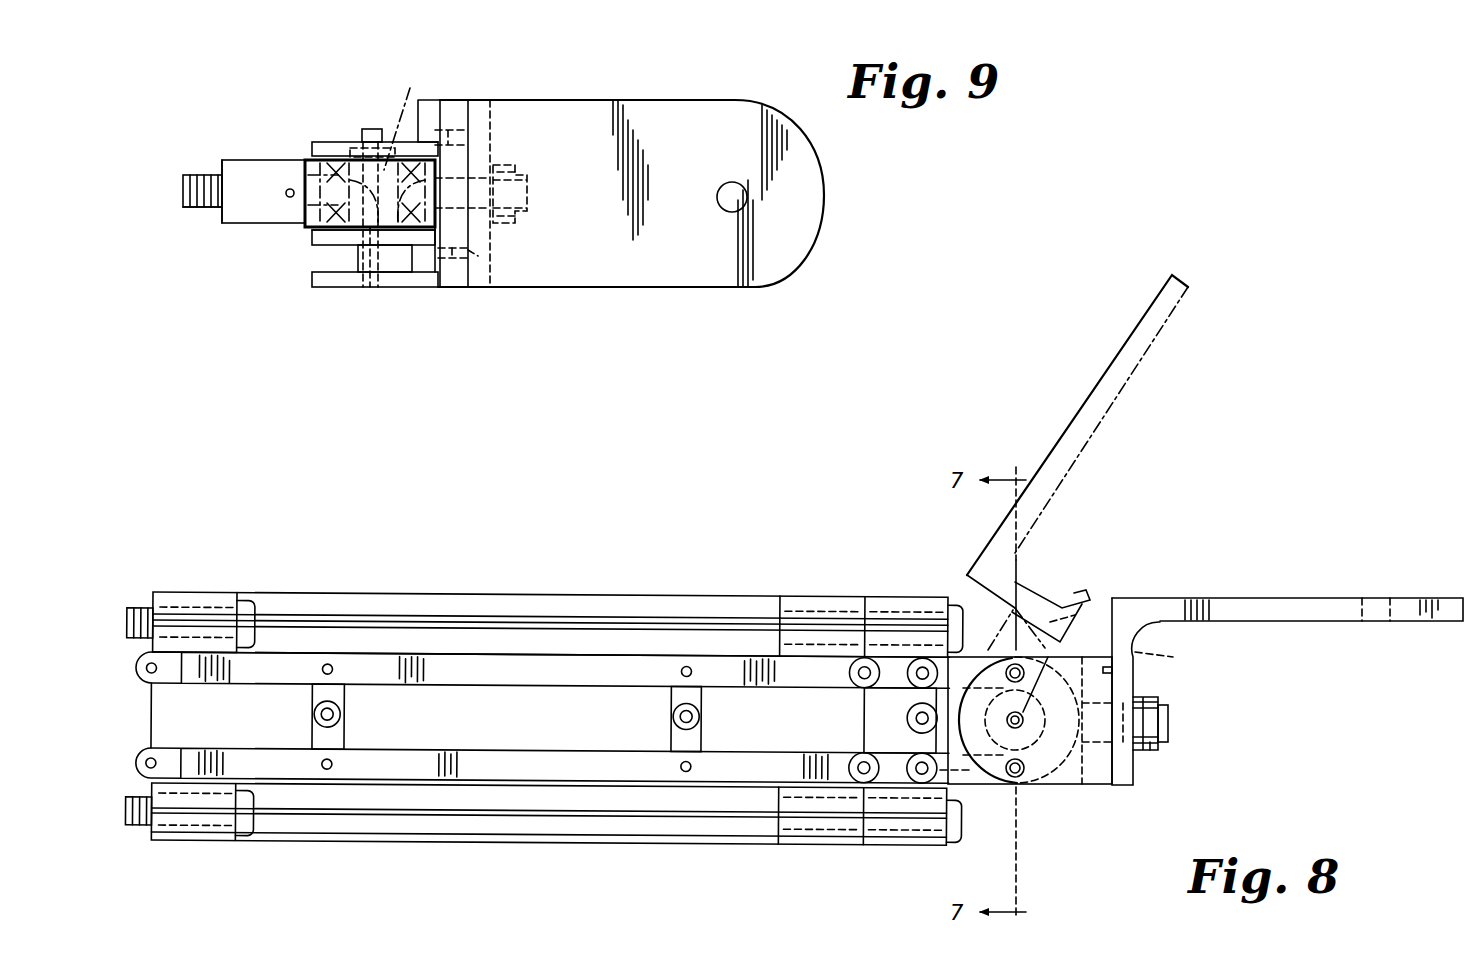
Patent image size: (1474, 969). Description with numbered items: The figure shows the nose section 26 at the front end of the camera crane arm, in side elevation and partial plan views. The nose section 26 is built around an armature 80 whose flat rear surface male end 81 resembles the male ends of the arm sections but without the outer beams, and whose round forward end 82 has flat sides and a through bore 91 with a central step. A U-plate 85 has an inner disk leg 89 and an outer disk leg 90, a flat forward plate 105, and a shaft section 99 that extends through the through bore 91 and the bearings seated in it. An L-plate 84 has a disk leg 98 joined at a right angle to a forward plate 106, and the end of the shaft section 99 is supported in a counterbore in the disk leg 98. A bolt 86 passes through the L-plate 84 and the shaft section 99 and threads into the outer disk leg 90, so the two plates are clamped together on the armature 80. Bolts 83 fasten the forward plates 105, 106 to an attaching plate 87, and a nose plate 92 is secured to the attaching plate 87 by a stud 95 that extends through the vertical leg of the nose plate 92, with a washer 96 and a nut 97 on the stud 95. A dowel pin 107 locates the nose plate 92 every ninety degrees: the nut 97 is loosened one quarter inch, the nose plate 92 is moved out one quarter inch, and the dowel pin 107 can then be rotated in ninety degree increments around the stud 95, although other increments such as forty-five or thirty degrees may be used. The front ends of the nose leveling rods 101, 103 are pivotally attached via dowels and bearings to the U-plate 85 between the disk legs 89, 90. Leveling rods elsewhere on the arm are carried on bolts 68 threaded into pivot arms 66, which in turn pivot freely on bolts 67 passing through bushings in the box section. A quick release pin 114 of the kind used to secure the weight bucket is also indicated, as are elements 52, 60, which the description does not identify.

In FIG. 9, the nose section 26 is at (204, 252).
In FIG. 8, the nose section 26 is at (866, 854).
In FIG. 9, the threaded rod 52 is at (183, 196).
In FIG. 8, the threaded rod 52 is at (928, 822).
In FIG. 9, the pin hole 60 is at (287, 189).
In FIG. 8, the pivot arms 66 is at (912, 724).
In FIG. 8, the bolts 67 is at (916, 710).
In FIG. 8, the bolts 68 is at (858, 757).
In FIG. 9, the armature 80 is at (244, 212).
In FIG. 9, the flat rear surface male end 81 is at (214, 157).
In FIG. 8, the round forward end 82 is at (1058, 780).
In FIG. 9, the bolts 83 is at (476, 253).
In FIG. 9, the L-plate 84 is at (330, 136).
In FIG. 9, the U-plate 85 is at (348, 292).
In FIG. 8, the U-plate 85 is at (1076, 662).
In FIG. 9, the bolt 86 is at (372, 128).
In FIG. 8, the bolt 86 is at (1023, 722).
In FIG. 9, the attaching plate 87 is at (458, 160).
In FIG. 8, the attaching plate 87 is at (1103, 690).
In FIG. 9, the inner disk leg 89 is at (325, 242).
In FIG. 9, the outer disk leg 90 is at (320, 288).
In FIG. 9, the through bore 91 is at (379, 252).
In FIG. 9, the nose plate 92 is at (652, 272).
In FIG. 8, the nose plate 92 is at (1295, 608).
In FIG. 9, the stud 95 is at (528, 198).
In FIG. 8, the stud 95 is at (1168, 722).
In FIG. 9, the washer 96 is at (514, 166).
In FIG. 9, the nut 97 is at (520, 224).
In FIG. 8, the nut 97 is at (1150, 752).
In FIG. 9, the disk leg 98 is at (318, 142).
In FIG. 9, the shaft section 99 is at (406, 117).
In FIG. 8, the nose leveling rod 101 is at (982, 657).
In FIG. 8, the nose leveling rod 103 is at (975, 779).
In FIG. 9, the flat forward plate 105 is at (423, 278).
In FIG. 9, the forward plate 106 is at (438, 108).
In FIG. 8, the dowel pin 107 is at (1177, 656).
In FIG. 8, the quick release pin 114 is at (912, 656).